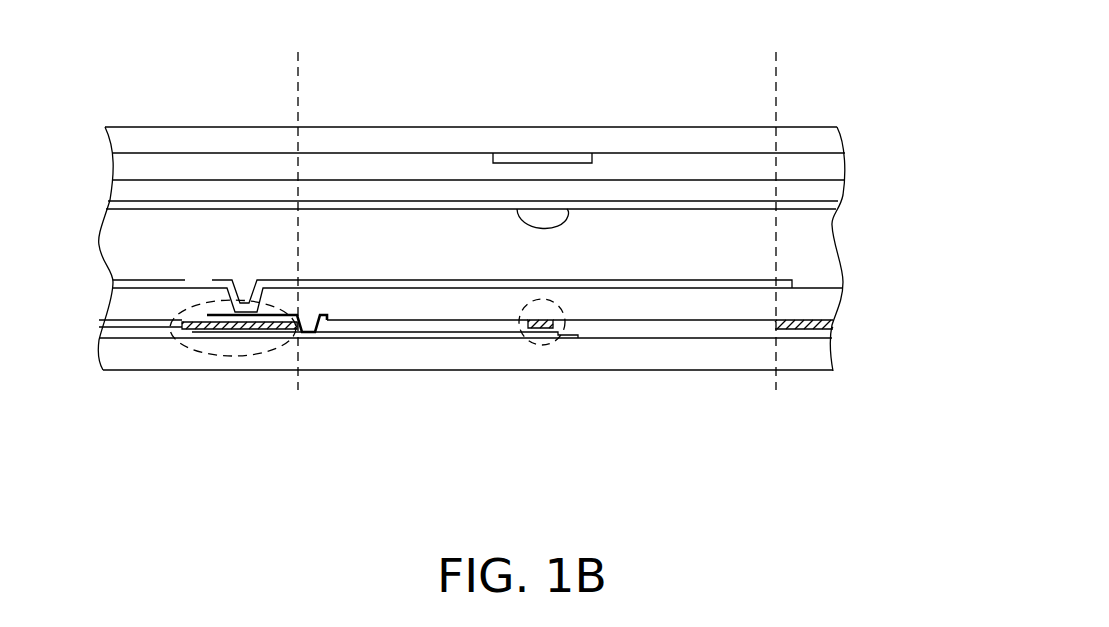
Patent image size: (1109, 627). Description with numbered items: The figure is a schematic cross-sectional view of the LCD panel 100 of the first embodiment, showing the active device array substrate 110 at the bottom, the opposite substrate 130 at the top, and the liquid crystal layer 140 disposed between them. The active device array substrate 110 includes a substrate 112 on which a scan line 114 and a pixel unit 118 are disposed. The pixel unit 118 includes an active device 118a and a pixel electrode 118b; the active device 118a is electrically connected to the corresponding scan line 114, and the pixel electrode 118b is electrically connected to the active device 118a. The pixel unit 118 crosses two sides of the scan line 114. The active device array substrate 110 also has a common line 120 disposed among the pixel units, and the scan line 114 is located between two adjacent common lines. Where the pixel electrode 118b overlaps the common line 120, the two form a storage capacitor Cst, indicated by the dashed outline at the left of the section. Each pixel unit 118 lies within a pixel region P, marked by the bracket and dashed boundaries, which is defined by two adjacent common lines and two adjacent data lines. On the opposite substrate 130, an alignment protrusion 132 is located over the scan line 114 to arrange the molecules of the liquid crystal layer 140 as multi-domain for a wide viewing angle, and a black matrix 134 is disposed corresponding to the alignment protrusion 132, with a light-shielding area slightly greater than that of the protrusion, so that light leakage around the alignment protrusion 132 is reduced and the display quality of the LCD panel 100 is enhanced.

The LCD panel 100 is at (894, 509).
The active device array substrate 110 is at (742, 380).
The substrate 112 is at (820, 355).
The scan line 114 is at (543, 328).
The pixel unit 118 is at (537, 432).
The active device 118a is at (526, 352).
The pixel electrode 118b is at (440, 285).
The common line 120 is at (210, 324).
The storage capacitor Cst is at (270, 354).
The opposite substrate 130 is at (858, 138).
The alignment protrusion 132 is at (557, 217).
The black matrix 134 is at (540, 158).
The liquid crystal layer 140 is at (803, 245).
The pixel region P is at (773, 53).